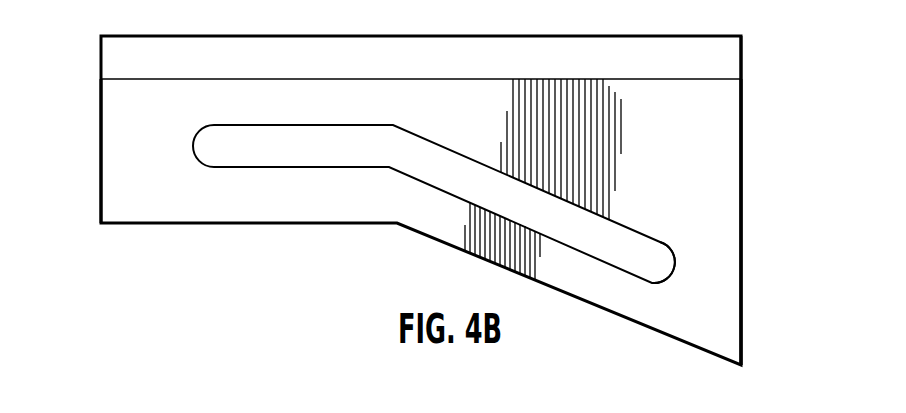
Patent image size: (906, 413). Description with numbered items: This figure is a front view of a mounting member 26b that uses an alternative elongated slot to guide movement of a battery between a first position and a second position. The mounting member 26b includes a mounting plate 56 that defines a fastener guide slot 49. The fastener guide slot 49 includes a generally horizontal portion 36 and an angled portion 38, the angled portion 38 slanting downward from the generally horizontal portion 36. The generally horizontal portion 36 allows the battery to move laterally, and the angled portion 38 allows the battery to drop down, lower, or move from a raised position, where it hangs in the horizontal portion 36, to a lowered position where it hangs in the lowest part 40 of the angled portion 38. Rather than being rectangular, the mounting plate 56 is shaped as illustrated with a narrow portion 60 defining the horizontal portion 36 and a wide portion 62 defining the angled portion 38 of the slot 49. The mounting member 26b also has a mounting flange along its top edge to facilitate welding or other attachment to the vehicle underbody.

The mounting member 26b is at (86, 154).
The mounting plate 56 is at (724, 127).
The narrow portion 60 is at (138, 113).
The wide portion 62 is at (703, 198).
The generally horizontal portion 36 is at (295, 174).
The angled portion 38 is at (487, 173).
The fastener guide slot 49 is at (415, 186).
The lowest part 40 is at (655, 285).